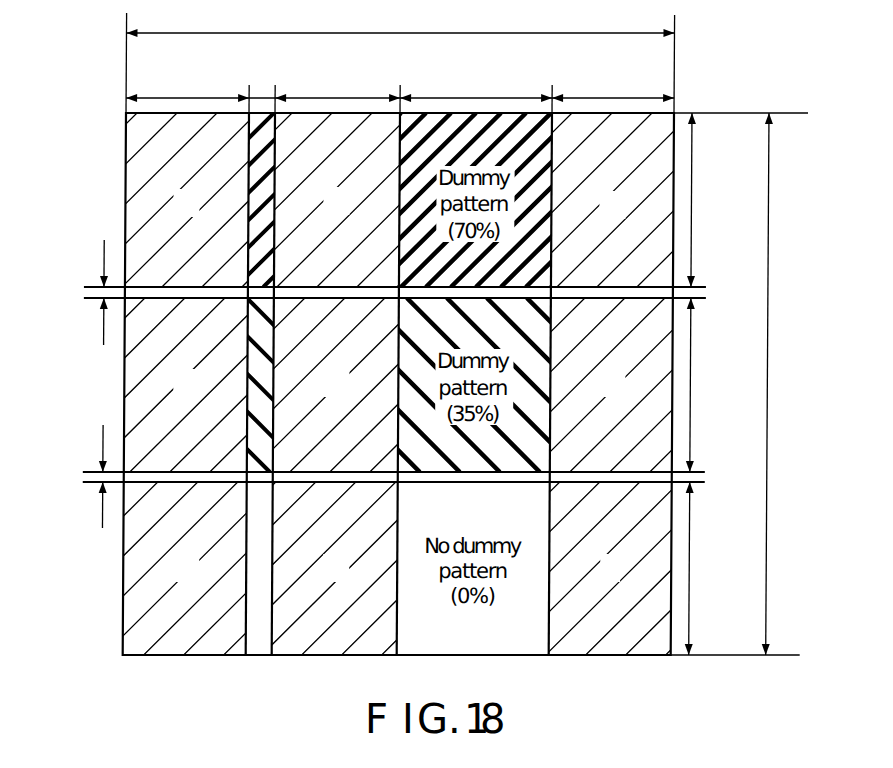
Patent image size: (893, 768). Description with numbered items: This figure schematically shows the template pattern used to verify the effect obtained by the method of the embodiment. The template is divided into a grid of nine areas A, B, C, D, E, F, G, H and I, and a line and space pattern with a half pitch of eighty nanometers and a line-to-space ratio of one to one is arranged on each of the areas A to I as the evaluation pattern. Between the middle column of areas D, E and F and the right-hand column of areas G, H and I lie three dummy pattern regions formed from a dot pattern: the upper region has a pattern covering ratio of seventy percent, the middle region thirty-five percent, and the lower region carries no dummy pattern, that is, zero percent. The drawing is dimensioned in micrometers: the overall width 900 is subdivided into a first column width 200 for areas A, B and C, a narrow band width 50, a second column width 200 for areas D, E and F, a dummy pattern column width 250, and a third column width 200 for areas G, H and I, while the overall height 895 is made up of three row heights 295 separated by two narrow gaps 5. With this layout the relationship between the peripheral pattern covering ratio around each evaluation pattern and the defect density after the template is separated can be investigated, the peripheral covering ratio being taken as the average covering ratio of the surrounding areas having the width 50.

The area A is at (208, 200).
The area B is at (192, 385).
The area C is at (199, 568).
The area D is at (344, 200).
The area E is at (337, 385).
The area F is at (329, 568).
The area G is at (604, 200).
The area H is at (617, 385).
The area I is at (613, 568).
The total width 900 micrometers 900 is at (400, 21).
The width 200 micrometers 200 is at (400, 84).
The 50 µm width 50 is at (263, 79).
The width 250 micrometers 250 is at (476, 85).
The height 295 micrometers 295 is at (723, 384).
The total height 895 micrometers 895 is at (802, 384).
The gap 5 micrometers 5 is at (70, 384).